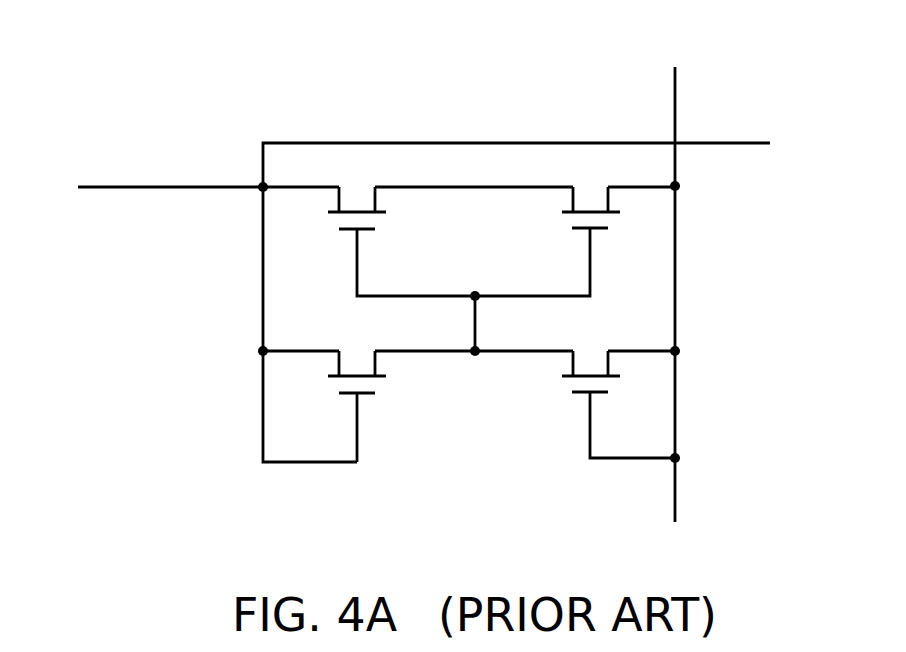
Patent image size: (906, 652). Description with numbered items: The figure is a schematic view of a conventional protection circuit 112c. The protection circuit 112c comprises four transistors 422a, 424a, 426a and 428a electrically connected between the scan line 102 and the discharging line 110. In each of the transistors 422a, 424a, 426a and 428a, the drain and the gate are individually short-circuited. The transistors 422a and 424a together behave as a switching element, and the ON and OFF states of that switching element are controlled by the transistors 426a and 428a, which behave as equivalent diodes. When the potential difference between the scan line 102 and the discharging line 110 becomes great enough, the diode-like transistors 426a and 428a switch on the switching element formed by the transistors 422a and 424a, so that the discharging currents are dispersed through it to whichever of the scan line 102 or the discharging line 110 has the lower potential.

The protection circuit 112c is at (88, 33).
The scan line 102 is at (138, 190).
The discharging line 110 is at (677, 500).
The transistor 422a is at (358, 203).
The transistor 424a is at (590, 203).
The transistor 426a is at (365, 398).
The transistor 428a is at (578, 397).